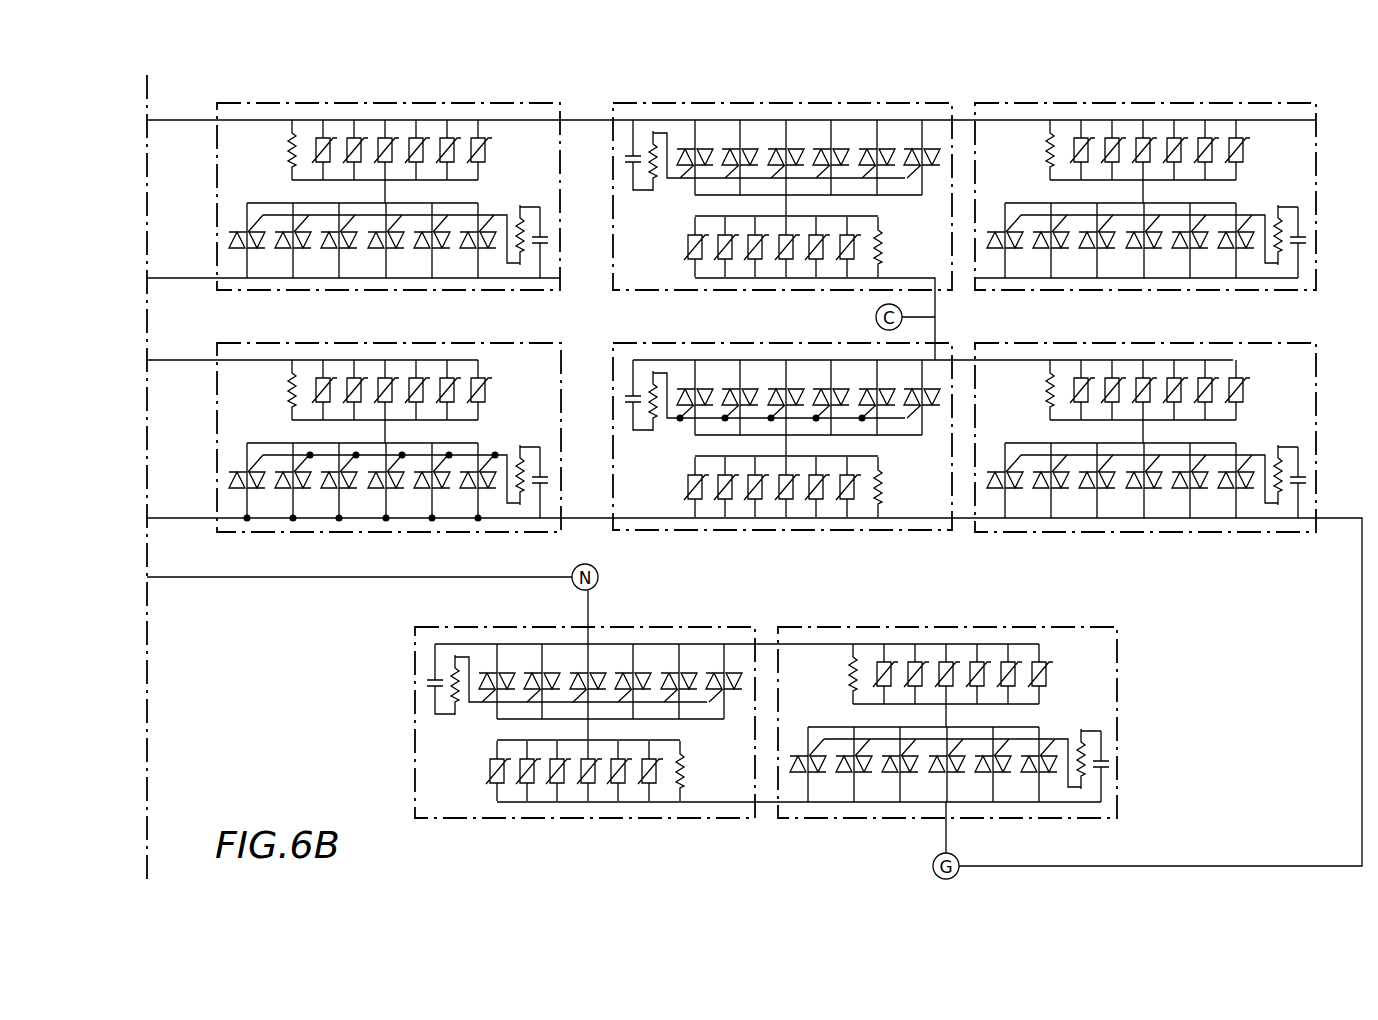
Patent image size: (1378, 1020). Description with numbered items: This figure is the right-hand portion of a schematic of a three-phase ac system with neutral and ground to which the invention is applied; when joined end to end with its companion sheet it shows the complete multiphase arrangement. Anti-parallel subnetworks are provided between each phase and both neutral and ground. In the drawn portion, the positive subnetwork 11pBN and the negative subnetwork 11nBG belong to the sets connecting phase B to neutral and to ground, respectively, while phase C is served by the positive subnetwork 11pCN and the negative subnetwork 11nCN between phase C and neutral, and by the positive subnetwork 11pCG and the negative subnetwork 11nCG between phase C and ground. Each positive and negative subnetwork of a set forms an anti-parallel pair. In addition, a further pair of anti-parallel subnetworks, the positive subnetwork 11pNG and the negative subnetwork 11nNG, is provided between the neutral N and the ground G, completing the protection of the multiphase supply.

The positive subnetwork 11pBN is at (343, 103).
The negative subnetwork 11nCN is at (737, 103).
The positive subnetwork 11pCN is at (1098, 103).
The negative subnetwork 11nBG is at (343, 343).
The positive subnetwork 11pCG is at (737, 343).
The negative subnetwork 11nCG is at (1098, 343).
The positive subnetwork 11pNG is at (645, 627).
The negative subnetwork 11nNG is at (902, 627).